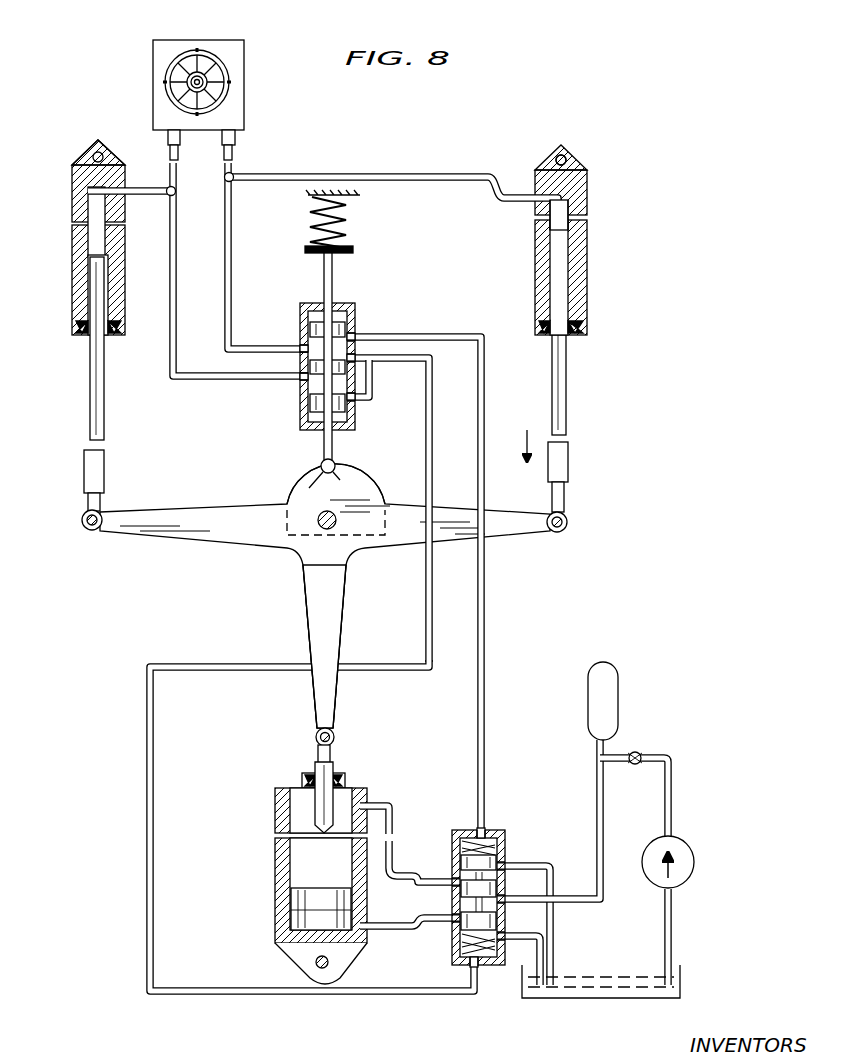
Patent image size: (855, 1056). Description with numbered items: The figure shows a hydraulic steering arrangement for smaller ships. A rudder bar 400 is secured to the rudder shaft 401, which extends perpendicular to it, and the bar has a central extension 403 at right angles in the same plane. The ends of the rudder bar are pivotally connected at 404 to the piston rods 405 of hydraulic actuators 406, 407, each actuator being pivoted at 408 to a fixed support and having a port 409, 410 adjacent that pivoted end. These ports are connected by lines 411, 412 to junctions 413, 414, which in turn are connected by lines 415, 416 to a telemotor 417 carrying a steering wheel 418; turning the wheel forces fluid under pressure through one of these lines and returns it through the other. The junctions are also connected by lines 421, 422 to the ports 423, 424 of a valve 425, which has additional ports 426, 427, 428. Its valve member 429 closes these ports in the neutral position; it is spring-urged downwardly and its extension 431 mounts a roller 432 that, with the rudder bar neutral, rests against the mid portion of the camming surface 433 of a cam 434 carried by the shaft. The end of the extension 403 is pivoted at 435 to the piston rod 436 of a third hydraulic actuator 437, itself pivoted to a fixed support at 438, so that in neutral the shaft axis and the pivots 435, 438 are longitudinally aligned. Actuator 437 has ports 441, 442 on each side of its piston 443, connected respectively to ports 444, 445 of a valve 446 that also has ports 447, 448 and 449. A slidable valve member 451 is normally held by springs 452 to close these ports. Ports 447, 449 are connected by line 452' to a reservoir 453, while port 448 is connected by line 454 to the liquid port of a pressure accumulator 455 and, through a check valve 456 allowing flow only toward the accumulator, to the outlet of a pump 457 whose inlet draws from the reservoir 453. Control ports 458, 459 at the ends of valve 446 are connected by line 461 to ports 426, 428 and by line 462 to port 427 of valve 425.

The rudder bar 400 is at (366, 551).
The rudder shaft 401 is at (318, 528).
The central extension 403 is at (327, 703).
The pivotal connection 404 is at (96, 532).
The piston rod 405 is at (103, 442).
The hydraulic actuator 406 is at (118, 344).
The hydraulic actuator 407 is at (593, 338).
The pivot 408 is at (99, 151).
The port 409 is at (110, 176).
The port 410 is at (537, 192).
The line 411 is at (145, 186).
The line 412 is at (428, 176).
The junction 413 is at (175, 198).
The junction 414 is at (232, 183).
The line 415 is at (179, 171).
The line 416 is at (237, 157).
The telemotor 417 is at (246, 102).
The steering wheel 418 is at (167, 72).
The line 421 is at (178, 336).
The line 422 is at (233, 318).
The port 423 is at (300, 376).
The port 424 is at (300, 347).
The valve 425 is at (296, 413).
The port 426 is at (356, 404).
The port 427 is at (371, 361).
The port 428 is at (357, 332).
The valve member 429 is at (318, 373).
The extension 431 is at (322, 455).
The roller 432 is at (335, 464).
The camming surface 433 is at (330, 484).
The cam 434 is at (292, 488).
The pivot 435 is at (315, 733).
The piston rod 436 is at (322, 815).
The hydraulic actuator 437 is at (272, 872).
The pivot 438 is at (315, 967).
The port 441 is at (375, 801).
The port 442 is at (368, 944).
The piston 443 is at (296, 903).
The port 444 is at (450, 878).
The port 445 is at (452, 925).
The valve 446 is at (507, 832).
The port 447 is at (507, 869).
The port 448 is at (506, 898).
The port 449 is at (502, 942).
The slidable valve member 451 is at (461, 899).
The springs 452 is at (475, 887).
The line 452' is at (570, 927).
The reservoir 453 is at (585, 1000).
The line 454 is at (598, 794).
The pressure accumulator 455 is at (618, 695).
The check valve 456 is at (641, 755).
The pump 457 is at (689, 849).
The control port 458 is at (476, 830).
The control port 459 is at (478, 981).
The line 461 is at (488, 694).
The line 462 is at (310, 996).